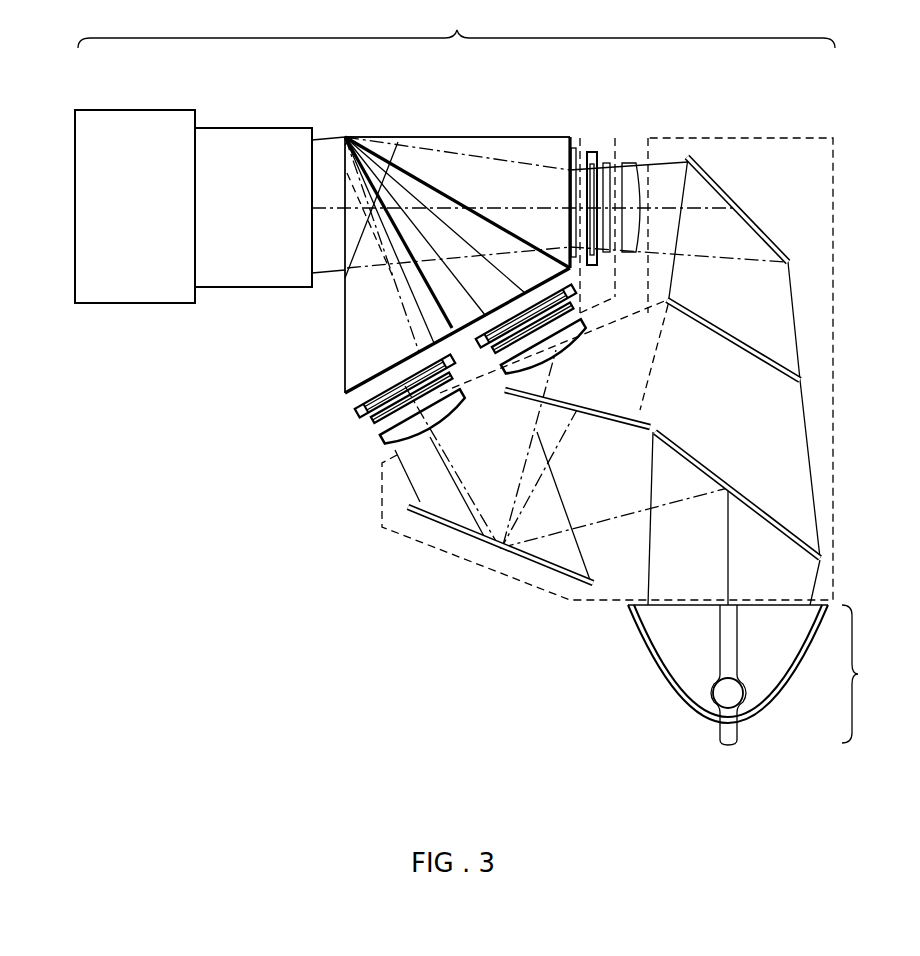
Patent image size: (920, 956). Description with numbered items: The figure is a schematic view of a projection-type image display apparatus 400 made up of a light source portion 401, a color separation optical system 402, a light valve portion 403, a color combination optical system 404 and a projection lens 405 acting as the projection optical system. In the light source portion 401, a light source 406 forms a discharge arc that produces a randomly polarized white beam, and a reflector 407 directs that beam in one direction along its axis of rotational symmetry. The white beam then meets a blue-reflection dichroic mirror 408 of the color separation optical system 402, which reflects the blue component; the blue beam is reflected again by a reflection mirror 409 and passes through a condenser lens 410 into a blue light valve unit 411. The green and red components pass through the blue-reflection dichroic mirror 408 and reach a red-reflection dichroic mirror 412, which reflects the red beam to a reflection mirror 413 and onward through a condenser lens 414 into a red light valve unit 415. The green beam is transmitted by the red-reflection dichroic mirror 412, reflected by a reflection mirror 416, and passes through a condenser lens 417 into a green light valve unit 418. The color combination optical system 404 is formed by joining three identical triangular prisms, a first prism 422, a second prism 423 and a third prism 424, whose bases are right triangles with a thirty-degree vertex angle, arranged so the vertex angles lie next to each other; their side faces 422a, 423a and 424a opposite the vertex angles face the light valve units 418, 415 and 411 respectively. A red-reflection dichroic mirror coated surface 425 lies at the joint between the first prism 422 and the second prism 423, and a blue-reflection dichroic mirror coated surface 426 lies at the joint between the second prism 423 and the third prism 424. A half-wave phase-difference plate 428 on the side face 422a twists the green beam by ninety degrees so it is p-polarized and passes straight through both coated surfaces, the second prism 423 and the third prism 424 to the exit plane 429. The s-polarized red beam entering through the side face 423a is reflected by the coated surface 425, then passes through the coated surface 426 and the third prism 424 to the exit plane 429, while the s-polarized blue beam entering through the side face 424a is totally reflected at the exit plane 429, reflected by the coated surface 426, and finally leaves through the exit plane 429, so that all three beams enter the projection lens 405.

The projection-type image display apparatus 400 is at (456, 27).
The light source portion 401 is at (766, 691).
The color separation optical system 402 is at (834, 424).
The light valve portion 403 is at (607, 163).
The color combination optical system 404 is at (497, 137).
The projection lens 405 is at (268, 128).
The light source 406 is at (712, 700).
The reflector 407 is at (758, 710).
The blue-reflection dichroic mirror 408 is at (800, 533).
The reflection mirror 409 is at (548, 578).
The condenser lens 410 is at (384, 443).
The blue light valve unit 411 is at (355, 415).
The red-reflection dichroic mirror 412 is at (795, 352).
The reflection mirror 413 is at (592, 432).
The condenser lens 414 is at (580, 318).
The red light valve unit 415 is at (505, 366).
The reflection mirror 416 is at (795, 225).
The condenser lens 417 is at (733, 150).
The green light valve unit 418 is at (630, 163).
The first prism 422 is at (453, 135).
The side face of the first prism 422a is at (575, 148).
The second prism 423 is at (413, 198).
The side face of the second prism 423a is at (468, 345).
The third prism 424 is at (356, 320).
The side face of the third prism 424a is at (345, 402).
The red-reflection dichroic mirror coated surface 425 is at (395, 135).
The blue-reflection dichroic mirror coated surface 426 is at (400, 297).
The λ/2 phase-difference plate 428 is at (592, 152).
The exit plane 429 is at (344, 137).